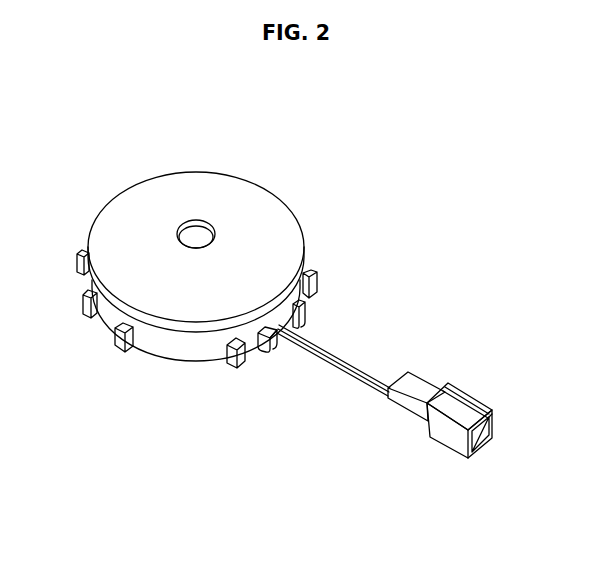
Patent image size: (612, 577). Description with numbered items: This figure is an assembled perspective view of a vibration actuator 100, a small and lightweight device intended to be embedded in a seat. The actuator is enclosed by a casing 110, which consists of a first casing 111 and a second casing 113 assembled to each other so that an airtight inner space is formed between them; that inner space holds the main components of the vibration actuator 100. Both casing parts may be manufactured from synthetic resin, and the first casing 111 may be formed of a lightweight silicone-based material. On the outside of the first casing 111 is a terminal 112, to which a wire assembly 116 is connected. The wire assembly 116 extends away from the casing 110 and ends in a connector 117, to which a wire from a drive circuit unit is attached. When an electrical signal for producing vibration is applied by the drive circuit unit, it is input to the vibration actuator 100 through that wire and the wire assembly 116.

The vibration actuator 100 is at (306, 194).
The casing 110 is at (187, 292).
The first casing 111 is at (175, 350).
The terminal 112 is at (280, 331).
The second casing 113 is at (138, 208).
The wire assembly 116 is at (362, 358).
The connector 117 is at (472, 396).